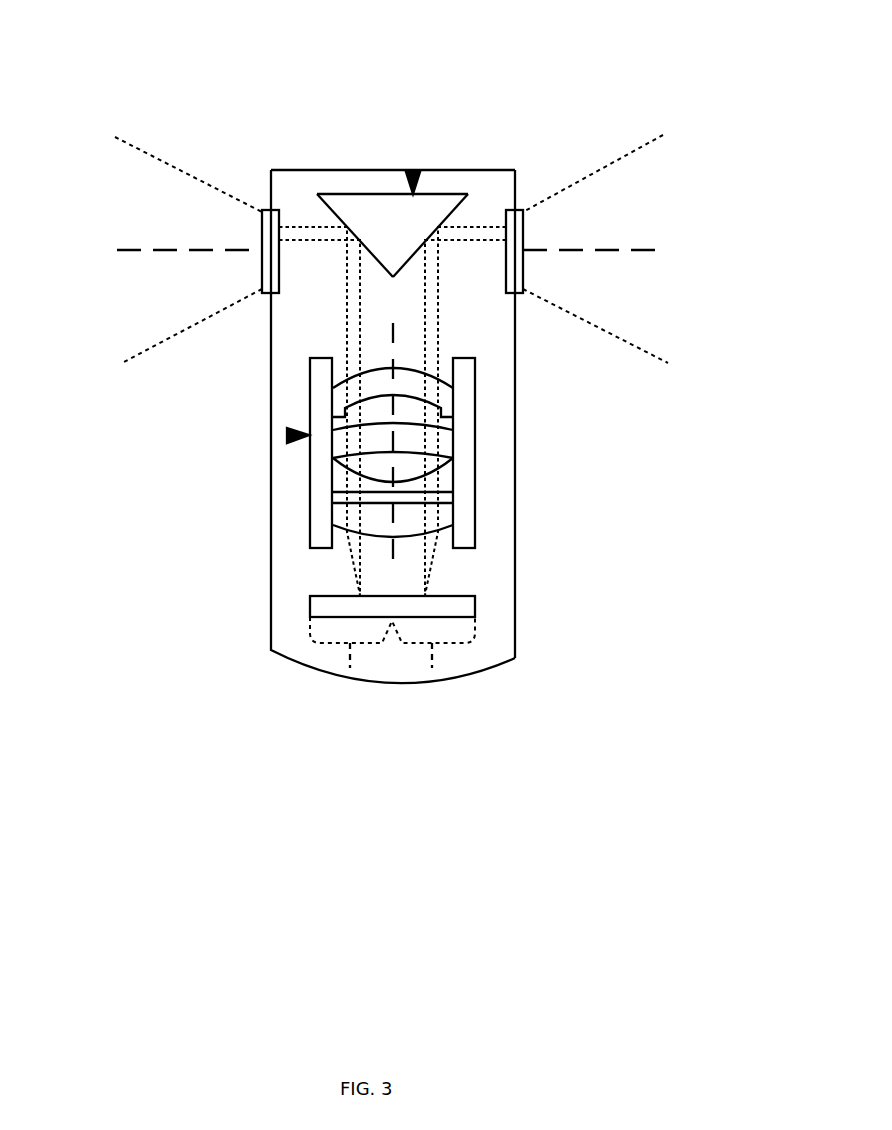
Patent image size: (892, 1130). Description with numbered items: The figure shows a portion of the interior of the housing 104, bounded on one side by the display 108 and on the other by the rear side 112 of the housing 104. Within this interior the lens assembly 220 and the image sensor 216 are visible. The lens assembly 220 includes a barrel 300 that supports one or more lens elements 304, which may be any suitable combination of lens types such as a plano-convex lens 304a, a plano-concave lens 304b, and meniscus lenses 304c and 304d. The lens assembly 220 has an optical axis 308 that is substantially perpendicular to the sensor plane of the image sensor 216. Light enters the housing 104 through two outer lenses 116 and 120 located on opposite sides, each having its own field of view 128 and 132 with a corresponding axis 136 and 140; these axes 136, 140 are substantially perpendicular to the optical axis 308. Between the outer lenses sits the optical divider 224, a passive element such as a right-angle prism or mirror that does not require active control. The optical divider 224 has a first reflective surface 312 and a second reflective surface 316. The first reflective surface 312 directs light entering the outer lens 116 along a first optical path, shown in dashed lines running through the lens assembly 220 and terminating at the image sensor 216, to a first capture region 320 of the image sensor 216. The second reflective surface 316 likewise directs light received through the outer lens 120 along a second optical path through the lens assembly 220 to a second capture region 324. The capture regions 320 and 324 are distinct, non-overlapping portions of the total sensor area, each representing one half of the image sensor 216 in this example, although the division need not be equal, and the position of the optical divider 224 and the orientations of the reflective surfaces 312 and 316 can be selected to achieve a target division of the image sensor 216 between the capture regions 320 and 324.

The housing 104 is at (393, 170).
The display 108 is at (271, 623).
The rear side 112 is at (515, 367).
The outer lens 116 is at (262, 232).
The outer lens 120 is at (523, 236).
The field of view 128 is at (140, 150).
The field of view 132 is at (637, 150).
The axis 136 is at (162, 251).
The axis 140 is at (619, 251).
The image sensor 216 is at (473, 597).
The lens assembly 220 is at (292, 436).
The optical divider 224 is at (413, 172).
The barrel 300 is at (323, 415).
The lens elements 304 is at (366, 466).
The plano-convex lens 304a is at (447, 515).
The plano-concave lens 304b is at (447, 482).
The meniscus lens 304c is at (447, 448).
The meniscus lens 304d is at (447, 400).
The optical axis 308 is at (393, 358).
The first reflective surface 312 is at (340, 218).
The second reflective surface 316 is at (450, 214).
The first capture region 320 is at (350, 668).
The second capture region 324 is at (432, 668).